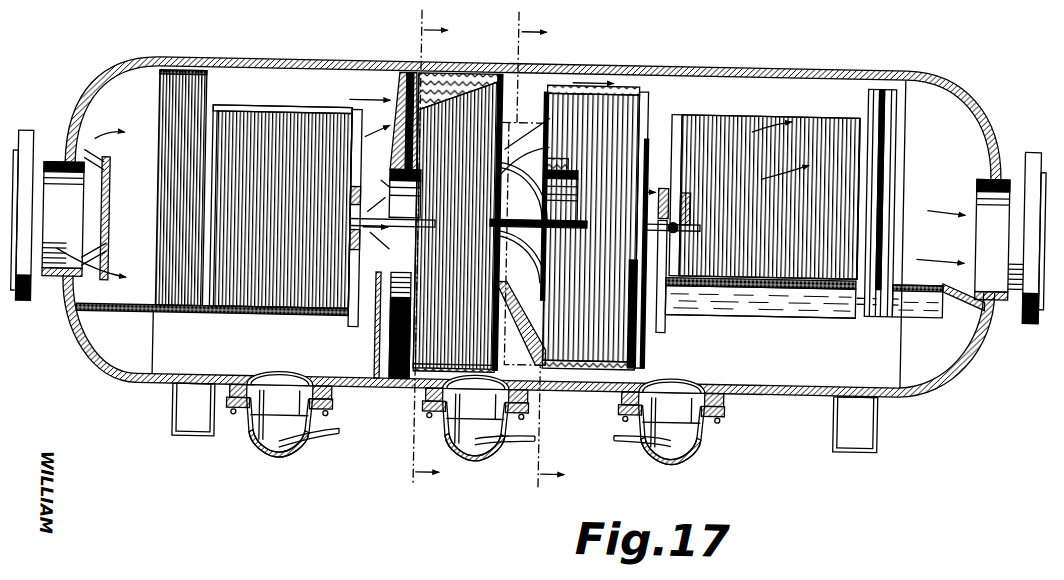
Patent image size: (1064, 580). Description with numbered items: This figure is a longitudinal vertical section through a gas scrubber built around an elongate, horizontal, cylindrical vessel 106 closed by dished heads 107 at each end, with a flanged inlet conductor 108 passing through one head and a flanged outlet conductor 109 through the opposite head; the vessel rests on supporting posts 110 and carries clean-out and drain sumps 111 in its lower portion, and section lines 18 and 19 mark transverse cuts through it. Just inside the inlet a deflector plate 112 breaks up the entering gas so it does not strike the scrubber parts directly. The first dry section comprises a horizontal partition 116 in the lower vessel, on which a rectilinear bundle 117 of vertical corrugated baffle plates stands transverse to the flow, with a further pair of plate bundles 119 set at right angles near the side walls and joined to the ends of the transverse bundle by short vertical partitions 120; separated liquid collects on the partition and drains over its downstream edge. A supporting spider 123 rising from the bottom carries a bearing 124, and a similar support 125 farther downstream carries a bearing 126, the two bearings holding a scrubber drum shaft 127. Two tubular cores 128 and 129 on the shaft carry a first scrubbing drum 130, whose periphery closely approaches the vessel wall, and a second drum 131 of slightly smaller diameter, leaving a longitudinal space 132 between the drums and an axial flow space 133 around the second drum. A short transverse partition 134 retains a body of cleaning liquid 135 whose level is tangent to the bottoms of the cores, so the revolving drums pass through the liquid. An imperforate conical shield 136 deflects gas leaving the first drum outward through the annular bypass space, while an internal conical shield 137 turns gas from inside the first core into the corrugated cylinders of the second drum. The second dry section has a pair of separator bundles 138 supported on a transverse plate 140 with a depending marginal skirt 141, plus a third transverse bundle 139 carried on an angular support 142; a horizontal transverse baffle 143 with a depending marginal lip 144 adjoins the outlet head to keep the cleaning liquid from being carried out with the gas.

The cylindrical vessel 106 is at (712, 64).
The dished heads 107 is at (526, 237).
The flanged inlet conductor 108 is at (32, 142).
The flanged outlet conductor 109 is at (1030, 144).
The supporting posts 110 is at (178, 413).
The clean-out and drain sumps 111 is at (317, 441).
The deflector plate 112 is at (109, 170).
The horizontal partition 116 is at (248, 319).
The rectilinear bundle of corrugated baffle plates 117 is at (196, 76).
The additional pair of plate bundles 119 is at (279, 174).
The short vertical partitions 120 is at (218, 112).
The supporting spider 123 is at (348, 331).
The supporting bearing 124 is at (358, 196).
The support 125 is at (665, 330).
The bearing 126 is at (662, 205).
The scrubber drum shaft 127 is at (388, 274).
The tubular cylinder (core) 128 is at (405, 193).
The tubular cylinder (core) 129 is at (539, 172).
The scrubbing drum 130 is at (488, 49).
The scrubbing drum 131 is at (641, 90).
The longitudinal space 132 is at (608, 51).
The axial flow space 133 is at (583, 206).
The short transverse partition 134 is at (377, 351).
The body of cleaning liquid 135 is at (822, 380).
The conical baffle or shielding member 136 is at (536, 272).
The internal baffle unit or shield 137 is at (538, 238).
The separator bundles 138 is at (746, 112).
The third bundle 139 is at (861, 197).
The transverse plate 140 is at (760, 311).
The marginal skirt 141 is at (840, 303).
The angular support 142 is at (880, 301).
The horizontal transverse baffle 143 is at (957, 300).
The depending marginal lip 144 is at (903, 298).
The section line 18- 18 is at (416, 251).
The section line 19- 19 is at (530, 253).